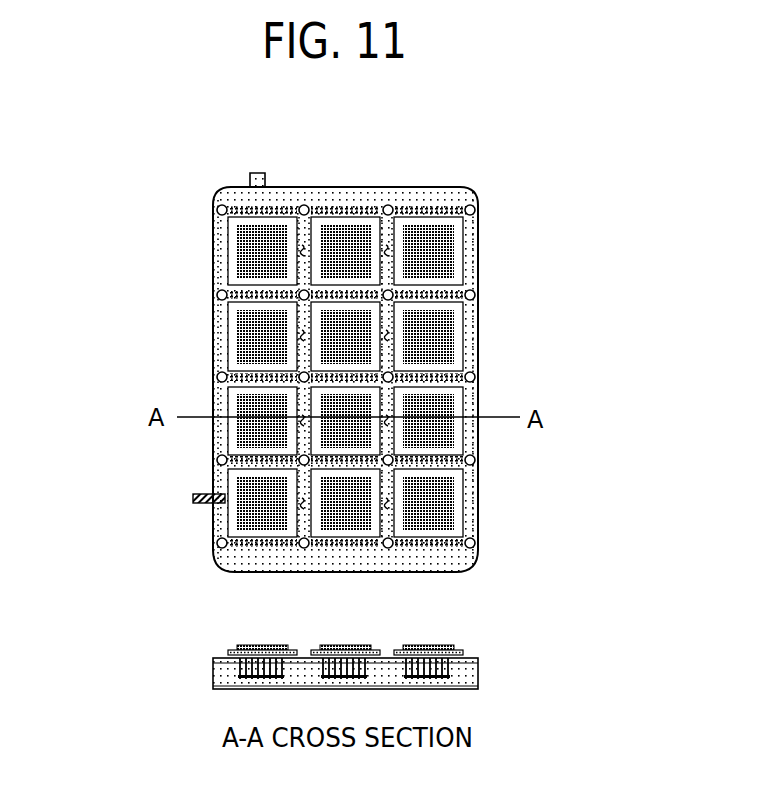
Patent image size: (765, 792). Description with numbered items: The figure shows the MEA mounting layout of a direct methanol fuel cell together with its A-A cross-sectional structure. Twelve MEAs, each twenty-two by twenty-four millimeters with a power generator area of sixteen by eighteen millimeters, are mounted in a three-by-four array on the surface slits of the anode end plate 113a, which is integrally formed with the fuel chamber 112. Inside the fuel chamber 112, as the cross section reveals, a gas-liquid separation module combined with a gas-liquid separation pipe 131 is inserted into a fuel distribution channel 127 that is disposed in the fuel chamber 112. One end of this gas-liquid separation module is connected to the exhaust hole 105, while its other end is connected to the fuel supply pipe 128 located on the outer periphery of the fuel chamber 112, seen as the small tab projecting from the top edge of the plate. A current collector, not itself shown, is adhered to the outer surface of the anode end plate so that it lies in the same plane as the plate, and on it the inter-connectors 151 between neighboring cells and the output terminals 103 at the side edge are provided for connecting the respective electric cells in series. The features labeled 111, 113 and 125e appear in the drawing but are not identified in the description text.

The fuel supply pipe 128 is at (250, 176).
The inter-connectors 151 is at (297, 250).
The fuel distribution channel 127 is at (227, 367).
The output terminals 103 is at (193, 498).
The hole 125e is at (217, 543).
The substrate 113 is at (464, 262).
The fuel chamber 112 is at (460, 677).
The chip 111 is at (457, 347).
The exhaust hole 105 is at (478, 548).
The anode end plate 113a is at (222, 655).
The gas-liquid separation pipe 131 is at (233, 690).